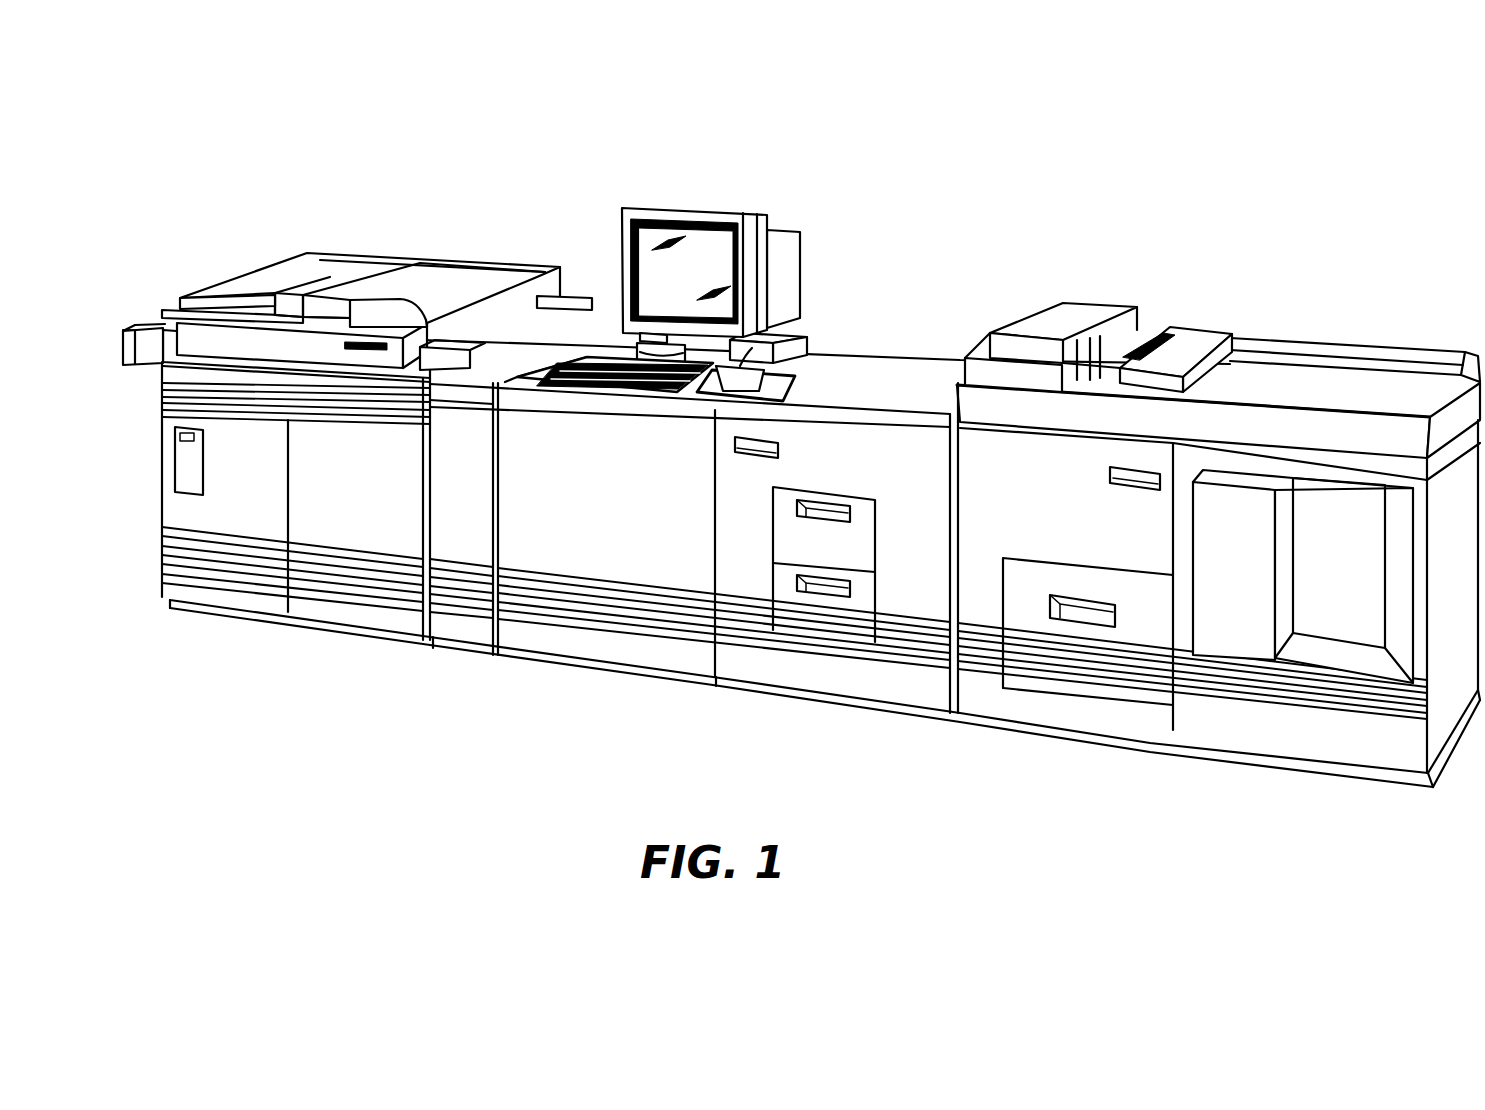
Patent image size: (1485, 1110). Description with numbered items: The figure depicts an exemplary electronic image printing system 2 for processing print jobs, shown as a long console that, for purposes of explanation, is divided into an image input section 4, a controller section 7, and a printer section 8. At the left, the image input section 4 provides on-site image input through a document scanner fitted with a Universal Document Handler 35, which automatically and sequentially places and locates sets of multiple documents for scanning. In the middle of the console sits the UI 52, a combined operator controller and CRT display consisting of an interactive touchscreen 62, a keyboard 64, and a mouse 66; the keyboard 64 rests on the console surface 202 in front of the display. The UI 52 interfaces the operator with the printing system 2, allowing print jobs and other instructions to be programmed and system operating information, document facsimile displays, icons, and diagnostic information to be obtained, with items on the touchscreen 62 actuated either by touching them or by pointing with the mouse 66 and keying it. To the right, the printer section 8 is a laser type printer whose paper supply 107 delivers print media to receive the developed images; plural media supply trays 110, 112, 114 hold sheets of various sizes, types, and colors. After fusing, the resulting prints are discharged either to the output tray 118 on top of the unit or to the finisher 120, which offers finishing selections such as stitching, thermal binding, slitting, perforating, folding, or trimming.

The image printing system 2 is at (893, 112).
The image input section 4 is at (412, 237).
The controller section 7 is at (150, 510).
The printer section 8 is at (920, 277).
The Universal Document Handler 35 is at (270, 283).
The UI 52 is at (718, 200).
The interactive touchscreen 62 is at (652, 280).
The keyboard 64 is at (604, 390).
The mouse 66 is at (710, 402).
The paper supply 107 is at (1038, 600).
The media supply tray 110 is at (1032, 562).
The media supply tray 112 is at (842, 495).
The media supply tray 114 is at (773, 582).
The output tray 118 is at (1147, 346).
The finisher 120 is at (1260, 742).
The keyboard tray 202 is at (545, 395).